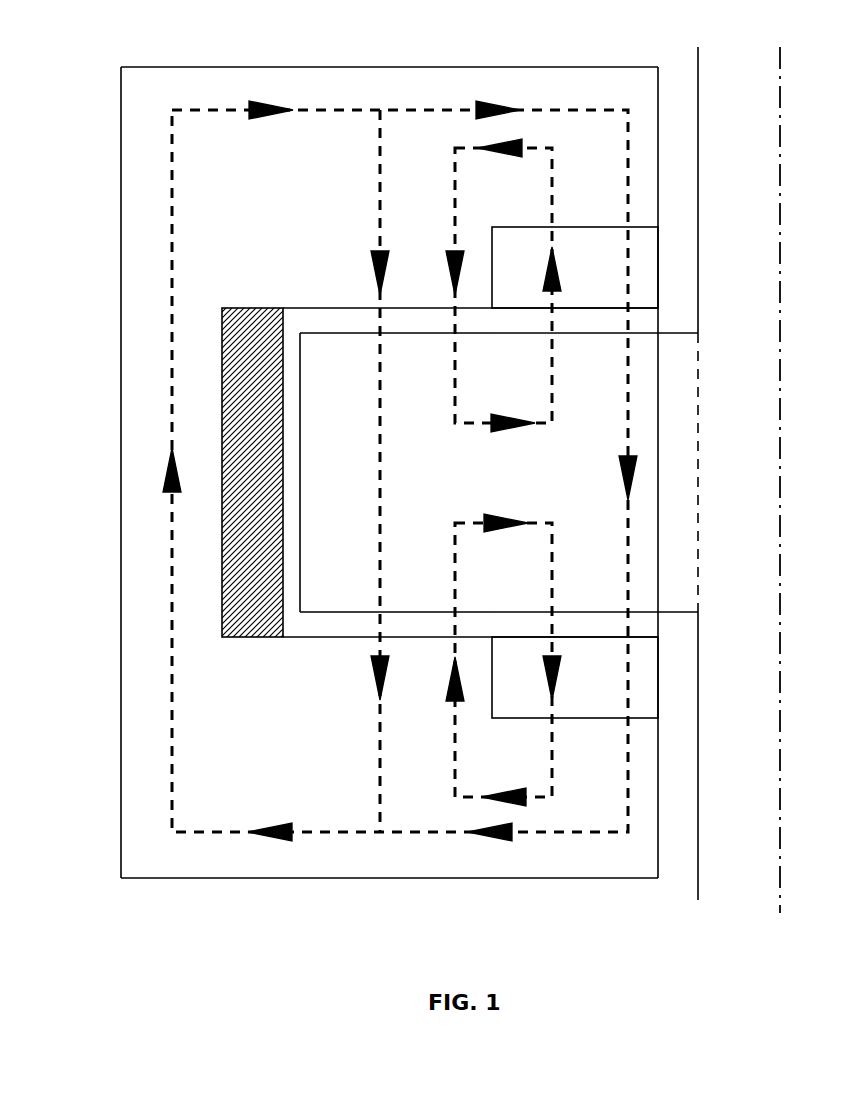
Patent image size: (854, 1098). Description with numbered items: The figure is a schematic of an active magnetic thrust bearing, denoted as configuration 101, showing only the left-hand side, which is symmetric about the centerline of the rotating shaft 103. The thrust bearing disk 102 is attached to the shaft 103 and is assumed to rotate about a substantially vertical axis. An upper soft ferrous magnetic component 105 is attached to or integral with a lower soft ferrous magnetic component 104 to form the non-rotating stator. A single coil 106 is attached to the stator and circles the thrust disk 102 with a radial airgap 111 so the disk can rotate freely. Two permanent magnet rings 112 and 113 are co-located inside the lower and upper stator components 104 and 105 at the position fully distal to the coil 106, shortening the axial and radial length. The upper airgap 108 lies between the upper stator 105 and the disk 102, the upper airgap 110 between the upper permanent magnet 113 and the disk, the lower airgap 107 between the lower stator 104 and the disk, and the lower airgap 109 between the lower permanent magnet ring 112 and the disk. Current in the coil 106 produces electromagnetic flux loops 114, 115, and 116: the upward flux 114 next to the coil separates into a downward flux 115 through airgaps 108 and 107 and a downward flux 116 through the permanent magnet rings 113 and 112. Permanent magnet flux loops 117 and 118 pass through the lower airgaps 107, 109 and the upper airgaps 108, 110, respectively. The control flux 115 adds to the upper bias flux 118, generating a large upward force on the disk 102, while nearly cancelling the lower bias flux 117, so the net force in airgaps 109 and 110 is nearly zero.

The configuration 101 is at (88, 195).
The thrust bearing disk 102 is at (658, 513).
The rotating shaft 103 is at (790, 505).
The lower soft ferrous magnetic component 104 is at (477, 862).
The upper soft ferrous magnetic component 105 is at (502, 85).
The coil 106 is at (250, 317).
The lower airgap 107 is at (343, 623).
The upper airgap 108 is at (358, 318).
The lower airgap 109 is at (580, 623).
The upper airgap 110 is at (580, 323).
The radial airgap 111 is at (290, 475).
The lower permanent magnet ring 112 is at (567, 707).
The upper permanent magnet ring 113 is at (568, 240).
The upward electromagnetic flux 114 is at (195, 125).
The downward flux 115 is at (373, 213).
The downward flux 116 is at (604, 100).
The lower permanent magnet flux loop 117 is at (453, 720).
The upper permanent magnet bias flux loop 118 is at (447, 235).